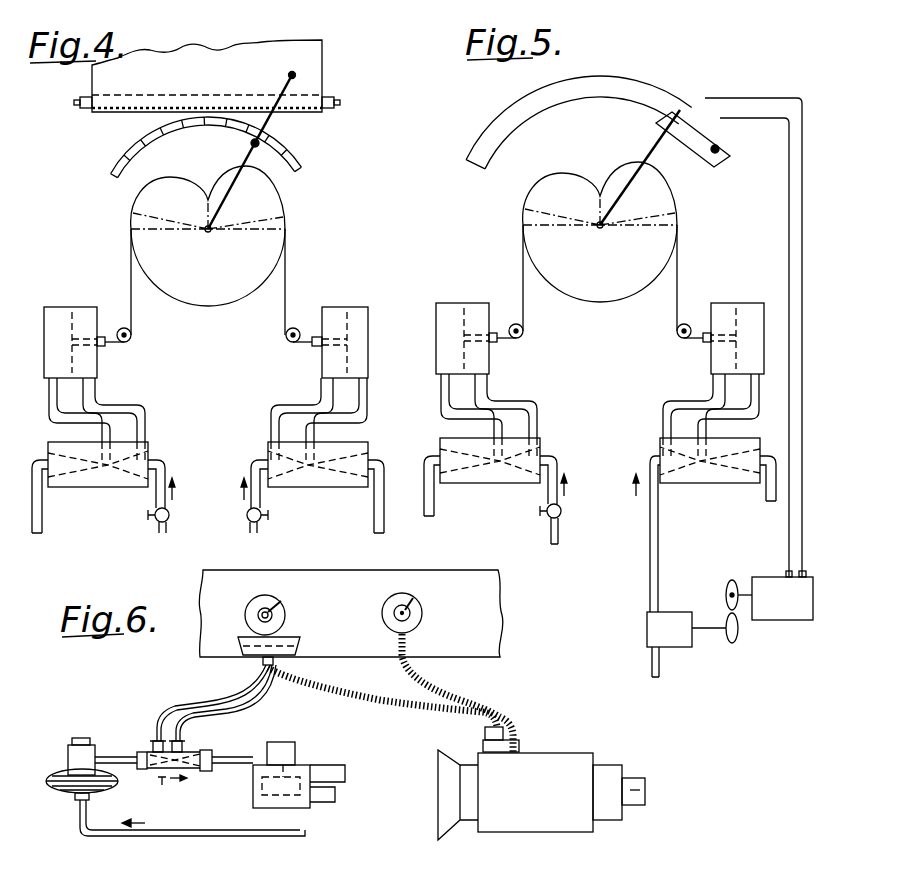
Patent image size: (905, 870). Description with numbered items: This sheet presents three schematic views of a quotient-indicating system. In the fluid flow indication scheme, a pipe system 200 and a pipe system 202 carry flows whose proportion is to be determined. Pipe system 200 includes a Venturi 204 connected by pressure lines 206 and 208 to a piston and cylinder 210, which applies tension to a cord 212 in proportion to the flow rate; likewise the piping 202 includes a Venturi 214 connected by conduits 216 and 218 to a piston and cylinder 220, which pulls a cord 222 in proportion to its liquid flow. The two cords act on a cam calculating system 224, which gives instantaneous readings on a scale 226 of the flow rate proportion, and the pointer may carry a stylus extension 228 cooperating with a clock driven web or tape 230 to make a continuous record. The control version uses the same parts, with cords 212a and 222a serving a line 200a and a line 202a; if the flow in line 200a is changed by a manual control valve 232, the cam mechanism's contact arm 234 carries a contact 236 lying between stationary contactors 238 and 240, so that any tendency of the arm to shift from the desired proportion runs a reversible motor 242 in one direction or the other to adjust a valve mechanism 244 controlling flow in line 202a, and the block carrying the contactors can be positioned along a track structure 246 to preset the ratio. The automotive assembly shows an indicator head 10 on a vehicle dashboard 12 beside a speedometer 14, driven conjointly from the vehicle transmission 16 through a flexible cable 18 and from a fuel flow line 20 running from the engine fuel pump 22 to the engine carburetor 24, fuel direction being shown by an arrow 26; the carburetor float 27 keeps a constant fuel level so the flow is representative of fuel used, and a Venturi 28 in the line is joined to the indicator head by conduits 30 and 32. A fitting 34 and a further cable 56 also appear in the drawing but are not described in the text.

In FIG. 6, the indicator head 10 is at (240, 621).
In FIG. 6, the vehicle dashboard 12 is at (488, 626).
In FIG. 6, the speedometer 14 is at (420, 604).
In FIG. 6, the vehicle transmission 16 is at (566, 755).
In FIG. 6, the flexible cable 18 is at (396, 708).
In FIG. 6, the fuel flow line 20 is at (229, 766).
In FIG. 6, the engine fuel pump 22 is at (66, 771).
In FIG. 6, the engine carburetor 24 is at (303, 766).
In FIG. 6, the arrow 26 is at (174, 785).
In FIG. 6, the float 27 is at (252, 808).
In FIG. 6, the Venturi 28 is at (148, 750).
In FIG. 6, the conduit 30 is at (205, 700).
In FIG. 6, the conduit 32 is at (222, 708).
In FIG. 6, the speedometer cable fitting 34 is at (483, 737).
In FIG. 6, the speedometer cable 56 is at (452, 676).
In FIG. 4, the pipe system 200 is at (156, 499).
In FIG. 4, the pipe system 202 is at (262, 497).
In FIG. 4, the Venturi 204 is at (150, 448).
In FIG. 4, the pressure line 206 is at (111, 407).
In FIG. 4, the pressure line 208 is at (51, 418).
In FIG. 4, the piston and cylinder 210 is at (80, 307).
In FIG. 4, the cord 212 is at (140, 318).
In FIG. 4, the Venturi 214 is at (368, 446).
In FIG. 4, the conduit 216 is at (266, 420).
In FIG. 4, the conduit 218 is at (314, 400).
In FIG. 4, the piston and cylinder 220 is at (336, 307).
In FIG. 4, the cord 222 is at (278, 318).
In FIG. 4, the cam calculating system 224 is at (290, 248).
In FIG. 4, the scale 226 is at (300, 165).
In FIG. 4, the stylus extension 228 is at (270, 120).
In FIG. 4, the clock driven web or tape 230 is at (312, 57).
In FIG. 5, the line 200a is at (540, 497).
In FIG. 5, the line 202a is at (658, 513).
In FIG. 5, the cord 212a is at (524, 316).
In FIG. 5, the cord 222a is at (675, 316).
In FIG. 5, the manual control valve 232 is at (536, 518).
In FIG. 5, the contact arm 234 is at (662, 166).
In FIG. 5, the contact 236 is at (706, 110).
In FIG. 5, the stationary contactor 238 is at (718, 130).
In FIG. 5, the stationary contactor 240 is at (688, 127).
In FIG. 5, the reversible motor 242 is at (783, 612).
In FIG. 5, the valve mechanism 244 is at (672, 629).
In FIG. 5, the track structure 246 is at (505, 147).